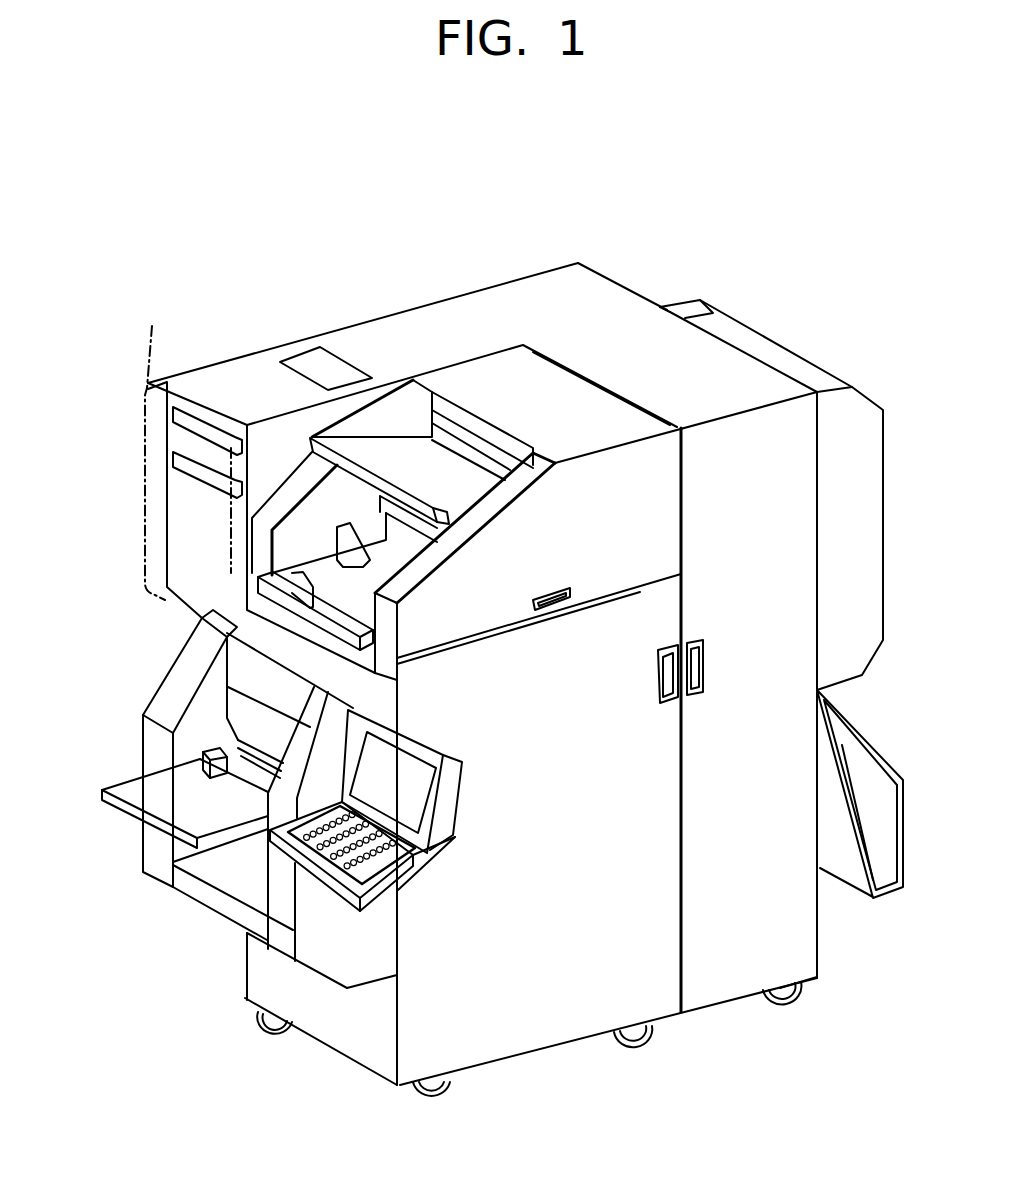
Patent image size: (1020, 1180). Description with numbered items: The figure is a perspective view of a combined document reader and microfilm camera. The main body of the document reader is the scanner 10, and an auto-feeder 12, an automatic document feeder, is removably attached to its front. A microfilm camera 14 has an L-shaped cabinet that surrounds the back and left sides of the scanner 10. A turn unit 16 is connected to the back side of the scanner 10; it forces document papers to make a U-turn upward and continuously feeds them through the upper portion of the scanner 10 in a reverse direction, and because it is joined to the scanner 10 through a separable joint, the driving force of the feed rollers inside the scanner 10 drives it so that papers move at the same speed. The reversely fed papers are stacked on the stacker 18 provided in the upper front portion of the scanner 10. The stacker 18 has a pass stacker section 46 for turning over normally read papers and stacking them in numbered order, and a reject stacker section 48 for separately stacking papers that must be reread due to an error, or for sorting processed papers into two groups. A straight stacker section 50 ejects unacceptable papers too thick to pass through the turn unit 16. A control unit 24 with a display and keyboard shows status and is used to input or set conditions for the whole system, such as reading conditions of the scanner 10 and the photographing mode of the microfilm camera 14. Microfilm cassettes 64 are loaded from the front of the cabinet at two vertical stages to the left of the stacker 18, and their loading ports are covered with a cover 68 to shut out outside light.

The scanner 10 is at (592, 1022).
The auto-feeder 12 is at (213, 727).
The microfilm camera 14 is at (588, 298).
The turn unit 16 is at (833, 407).
The stacker 18 is at (395, 457).
The control unit 24 is at (412, 856).
The pass stacker section 46 is at (317, 560).
The reject stacker section 48 is at (437, 460).
The straight stacker section 50 is at (875, 898).
The microfilm cassette 64 is at (167, 436).
The cover 68 is at (145, 513).